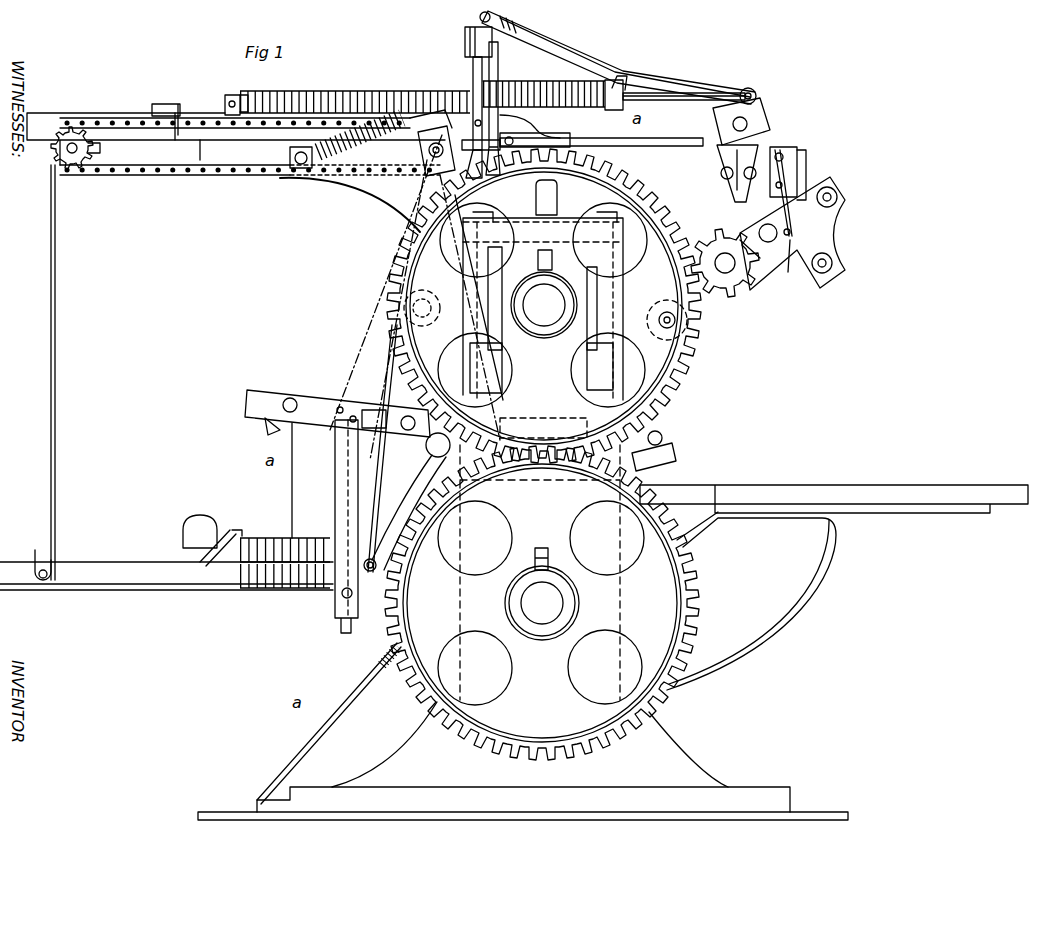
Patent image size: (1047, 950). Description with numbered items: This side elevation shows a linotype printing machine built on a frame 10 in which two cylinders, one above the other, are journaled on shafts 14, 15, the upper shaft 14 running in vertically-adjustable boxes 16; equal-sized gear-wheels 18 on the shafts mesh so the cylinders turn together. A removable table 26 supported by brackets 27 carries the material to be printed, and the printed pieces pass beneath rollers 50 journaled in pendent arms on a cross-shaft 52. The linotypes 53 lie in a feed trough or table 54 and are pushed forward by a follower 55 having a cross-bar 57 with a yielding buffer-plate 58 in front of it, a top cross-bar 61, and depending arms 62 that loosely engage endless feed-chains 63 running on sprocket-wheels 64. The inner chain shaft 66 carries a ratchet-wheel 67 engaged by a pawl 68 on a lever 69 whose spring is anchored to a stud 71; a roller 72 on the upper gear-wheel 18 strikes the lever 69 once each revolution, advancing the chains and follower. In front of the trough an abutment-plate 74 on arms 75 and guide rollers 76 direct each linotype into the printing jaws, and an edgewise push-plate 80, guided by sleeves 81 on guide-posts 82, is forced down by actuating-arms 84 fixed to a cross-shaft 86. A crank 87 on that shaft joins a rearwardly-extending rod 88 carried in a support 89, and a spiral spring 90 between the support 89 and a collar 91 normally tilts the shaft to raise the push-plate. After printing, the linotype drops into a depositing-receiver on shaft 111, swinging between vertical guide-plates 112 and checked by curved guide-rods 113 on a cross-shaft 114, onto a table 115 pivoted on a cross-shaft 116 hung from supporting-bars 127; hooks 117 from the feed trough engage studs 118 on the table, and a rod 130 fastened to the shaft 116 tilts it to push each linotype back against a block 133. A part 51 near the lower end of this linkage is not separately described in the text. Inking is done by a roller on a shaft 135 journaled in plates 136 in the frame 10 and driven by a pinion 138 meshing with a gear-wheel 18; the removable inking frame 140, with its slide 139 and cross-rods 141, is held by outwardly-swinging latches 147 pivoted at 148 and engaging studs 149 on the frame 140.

The frame 10 is at (445, 756).
The upper shaft 14 is at (544, 305).
The lower shaft 15 is at (542, 603).
The vertically-adjustable boxes 16 is at (618, 272).
The gear-wheels 18 is at (648, 195).
The table 26 is at (876, 478).
The brackets 27 is at (798, 588).
The rollers 50 is at (372, 602).
The link 51 is at (400, 555).
The cross-shaft 52 is at (295, 718).
The linotypes 53 is at (368, 92).
The feed trough or table 54 is at (62, 105).
The follower 55 is at (222, 95).
The cross-bar 57 is at (225, 100).
The buffer-plate 58 is at (268, 84).
The top cross-bar 61 is at (166, 109).
The depending arms 62 is at (185, 108).
The endless feed-chains 63 is at (205, 142).
The sprocket-wheels 64 is at (95, 150).
The shaft 66 is at (420, 168).
The ratchet-wheel 67 is at (398, 150).
The pawl 68 is at (468, 109).
The lever 69 is at (380, 200).
The stud 71 is at (290, 158).
The roller 72 is at (690, 320).
The abutment-plate 74 is at (540, 122).
The arms 75 is at (600, 130).
The rollers 76 is at (284, 183).
The push-plate 80 is at (498, 60).
The guide-sleeves 81 is at (465, 44).
The guide-posts 82 is at (470, 60).
The actuating-arms 84 is at (573, 50).
The cross-shaft 86 is at (762, 115).
The crank 87 is at (752, 88).
The rearwardly-extending rod 88 is at (715, 90).
The support 89 is at (468, 97).
The spiral spring 90 is at (553, 85).
The collar 91 is at (624, 82).
The shaft 111 is at (300, 390).
The vertical guide-plates 112 is at (383, 360).
The curved guide-rods 113 is at (540, 572).
The cross-shaft 114 is at (394, 410).
The table 115 is at (160, 550).
The cross-shaft 116 is at (336, 466).
The hooks 117 is at (57, 494).
The studs 118 is at (45, 590).
The supporting-bars 127 is at (677, 455).
The rod 130 is at (385, 342).
The block 133 is at (233, 523).
The shaft 135 is at (728, 270).
The plates 136 is at (712, 230).
The pinion 138 is at (722, 250).
The slide 139 is at (765, 228).
The frame 140 is at (830, 227).
The cross-rods 141 is at (840, 197).
The outwardly-swinging latches 147 is at (800, 175).
The pivot 148 is at (795, 150).
The studs 149 is at (795, 250).